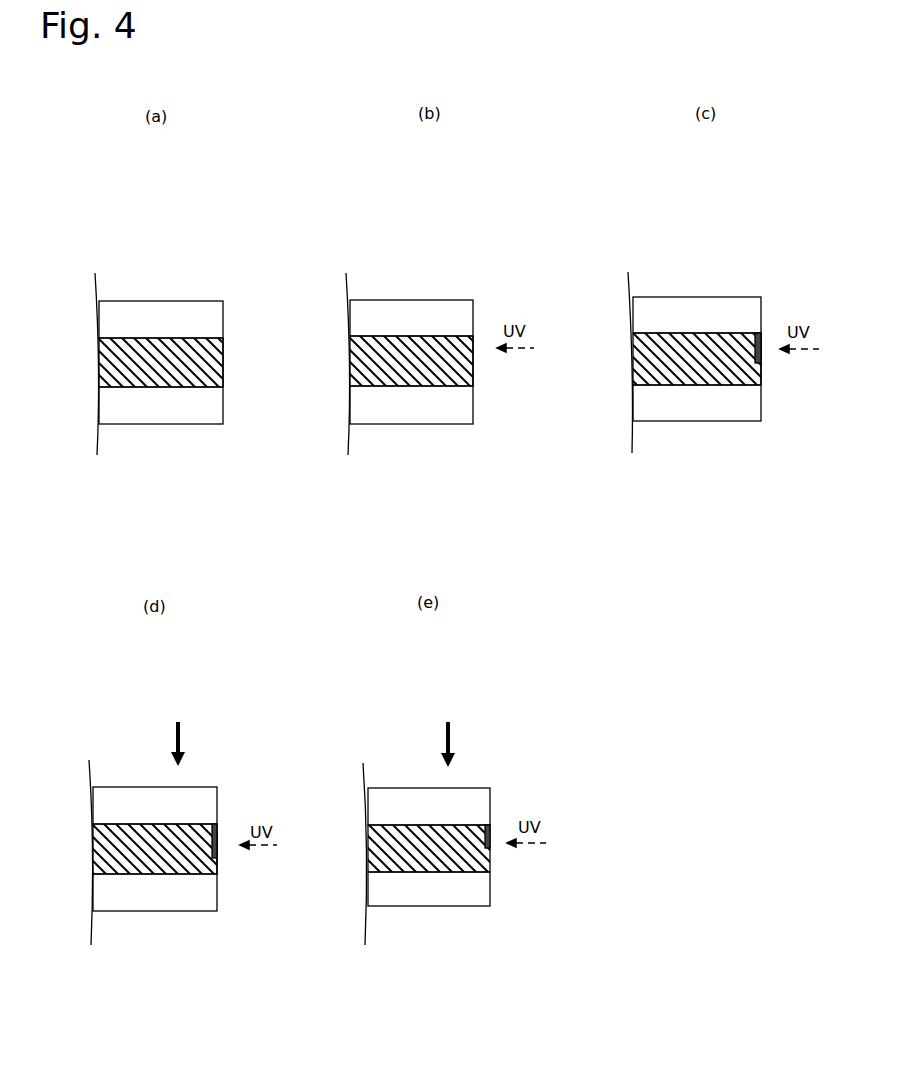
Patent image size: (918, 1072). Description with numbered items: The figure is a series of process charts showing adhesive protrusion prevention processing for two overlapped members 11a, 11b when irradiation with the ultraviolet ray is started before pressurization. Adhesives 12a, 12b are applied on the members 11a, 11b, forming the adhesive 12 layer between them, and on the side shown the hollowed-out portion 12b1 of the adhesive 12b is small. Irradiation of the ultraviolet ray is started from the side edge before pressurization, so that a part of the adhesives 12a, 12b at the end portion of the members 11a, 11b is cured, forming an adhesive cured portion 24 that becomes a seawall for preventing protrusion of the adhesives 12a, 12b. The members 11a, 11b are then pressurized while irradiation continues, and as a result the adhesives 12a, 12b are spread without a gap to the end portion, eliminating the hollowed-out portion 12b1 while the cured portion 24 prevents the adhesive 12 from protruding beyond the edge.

The member 11a is at (166, 301).
The member 11b is at (166, 424).
The adhesive 12 is at (413, 550).
The adhesive 12a is at (427, 603).
The adhesive 12b is at (122, 338).
The hollowed-out portion of the adhesive 12b1 is at (262, 360).
The adhesive cured portion 24 is at (763, 338).